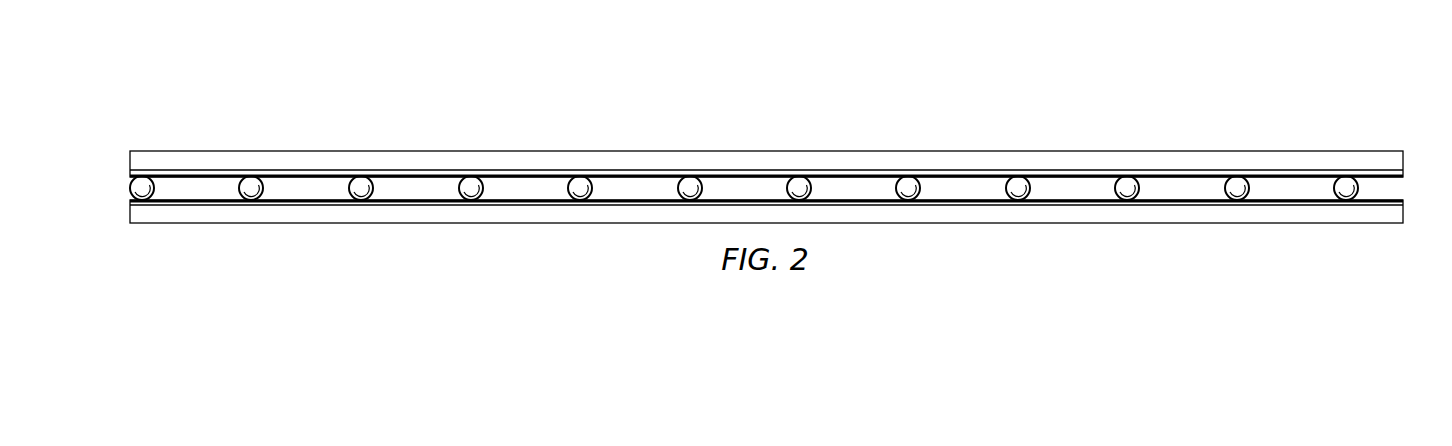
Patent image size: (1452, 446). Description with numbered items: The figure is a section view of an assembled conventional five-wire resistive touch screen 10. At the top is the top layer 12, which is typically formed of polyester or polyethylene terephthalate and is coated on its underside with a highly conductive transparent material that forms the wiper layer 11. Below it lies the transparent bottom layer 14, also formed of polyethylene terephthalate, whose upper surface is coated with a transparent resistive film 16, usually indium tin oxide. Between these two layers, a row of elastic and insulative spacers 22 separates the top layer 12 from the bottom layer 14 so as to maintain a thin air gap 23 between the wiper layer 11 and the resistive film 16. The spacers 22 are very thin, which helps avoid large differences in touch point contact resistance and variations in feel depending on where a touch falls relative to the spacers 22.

The resistive touch screen 10 is at (1065, 122).
The wiper layer 11 is at (738, 173).
The top layer 12 is at (1410, 150).
The transparent bottom layer 14 is at (1410, 199).
The resistive film 16 is at (534, 204).
The spacers 22 is at (250, 186).
The air gap 23 is at (436, 190).